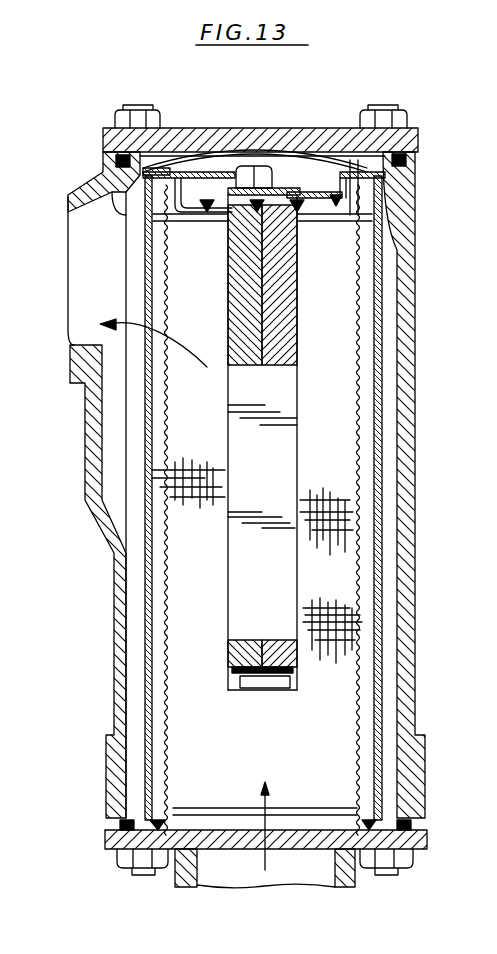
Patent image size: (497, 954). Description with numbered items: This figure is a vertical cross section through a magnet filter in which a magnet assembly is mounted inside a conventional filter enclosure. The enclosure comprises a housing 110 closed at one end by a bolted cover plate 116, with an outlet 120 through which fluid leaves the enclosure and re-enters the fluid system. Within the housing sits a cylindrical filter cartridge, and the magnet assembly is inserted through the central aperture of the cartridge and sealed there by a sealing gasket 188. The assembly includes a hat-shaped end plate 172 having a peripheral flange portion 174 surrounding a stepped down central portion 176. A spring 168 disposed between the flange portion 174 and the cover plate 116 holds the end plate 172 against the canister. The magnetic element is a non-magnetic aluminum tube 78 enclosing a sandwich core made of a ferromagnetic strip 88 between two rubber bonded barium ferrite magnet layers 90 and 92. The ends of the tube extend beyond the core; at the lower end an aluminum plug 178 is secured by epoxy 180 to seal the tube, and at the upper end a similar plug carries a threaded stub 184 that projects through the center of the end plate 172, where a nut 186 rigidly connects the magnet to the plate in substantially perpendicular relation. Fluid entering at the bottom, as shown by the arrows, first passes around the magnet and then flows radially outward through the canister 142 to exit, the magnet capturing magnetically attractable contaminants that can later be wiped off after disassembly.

The housing 110 is at (412, 446).
The outlet 120 is at (78, 345).
The cover plate 116 is at (220, 129).
The peripheral flange portion 174 is at (392, 165).
The threaded stub 184 is at (254, 168).
The spring 168 is at (330, 166).
The nut 186 is at (240, 181).
The end plate 172 is at (305, 178).
The sealing gasket 188 is at (299, 212).
The stepped down central portion 176 is at (198, 197).
The filter element 142 is at (362, 655).
The non-magnetic aluminum tube 78 is at (287, 461).
The rubber bonded barium ferrite magnet layer 92 is at (240, 317).
The rubber bonded barium ferrite magnet layer 90 is at (280, 338).
The ferromagnetic strip 88 is at (257, 643).
The epoxy 180 is at (234, 668).
The aluminum plug 178 is at (257, 682).